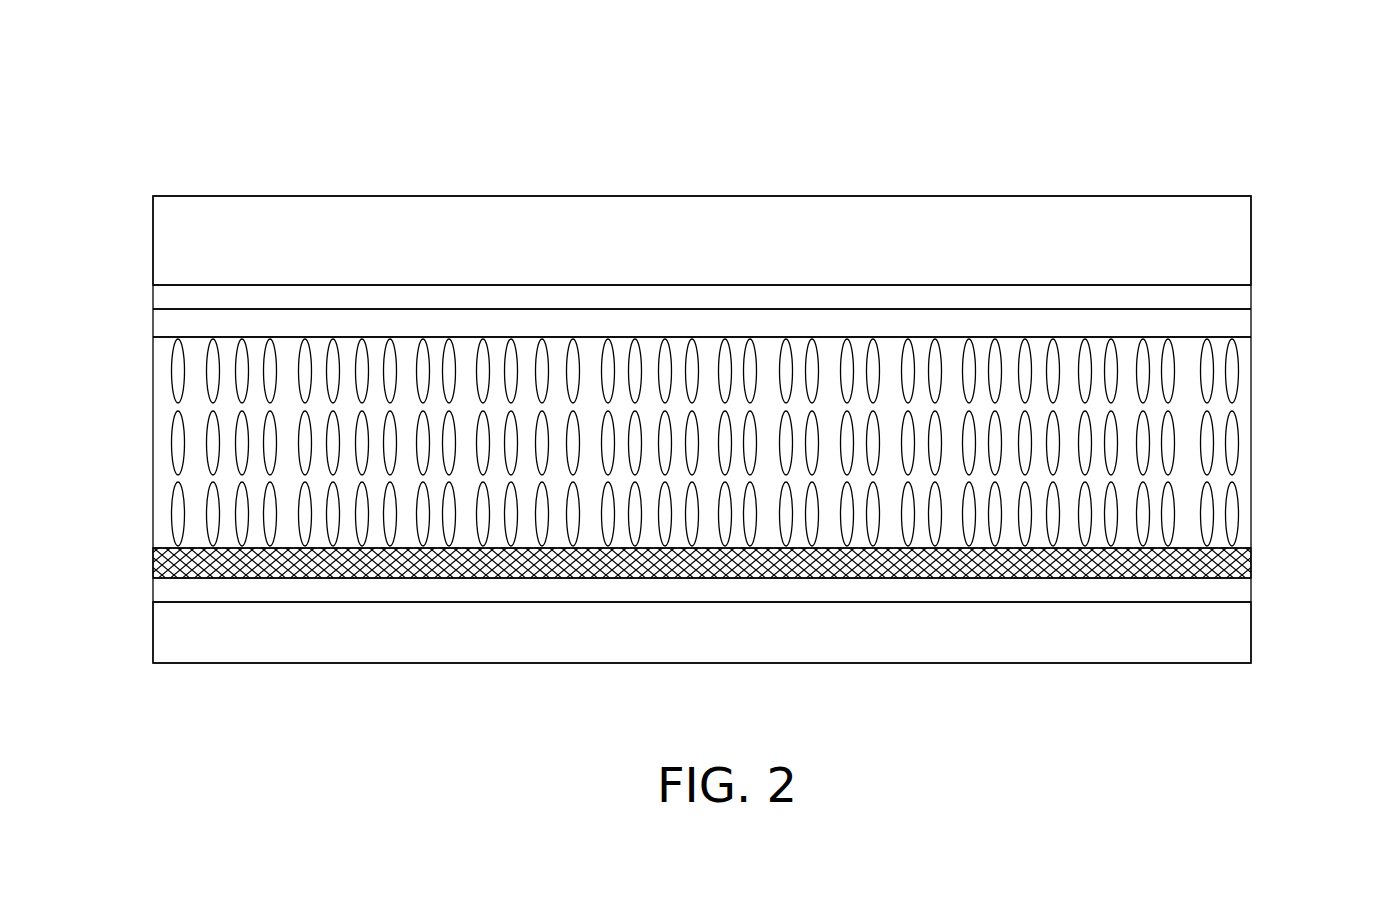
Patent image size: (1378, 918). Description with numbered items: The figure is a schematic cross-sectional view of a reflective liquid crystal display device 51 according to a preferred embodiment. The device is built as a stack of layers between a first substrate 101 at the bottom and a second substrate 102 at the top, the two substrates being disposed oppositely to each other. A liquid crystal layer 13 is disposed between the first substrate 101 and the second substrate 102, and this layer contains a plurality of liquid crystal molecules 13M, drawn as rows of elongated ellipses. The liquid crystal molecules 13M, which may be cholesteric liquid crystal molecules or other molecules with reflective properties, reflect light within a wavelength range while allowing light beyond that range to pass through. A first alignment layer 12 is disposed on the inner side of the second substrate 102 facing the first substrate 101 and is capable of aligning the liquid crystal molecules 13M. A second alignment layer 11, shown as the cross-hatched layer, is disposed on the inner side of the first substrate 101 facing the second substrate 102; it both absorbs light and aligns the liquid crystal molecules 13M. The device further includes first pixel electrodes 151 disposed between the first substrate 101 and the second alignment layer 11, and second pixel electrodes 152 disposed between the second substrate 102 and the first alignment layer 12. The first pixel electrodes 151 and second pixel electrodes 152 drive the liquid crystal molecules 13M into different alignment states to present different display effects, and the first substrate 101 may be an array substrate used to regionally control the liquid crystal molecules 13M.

The reflective liquid crystal display device 51 is at (1175, 137).
The second substrate 102 is at (1237, 244).
The second pixel electrodes 152 is at (1237, 298).
The first alignment layer 12 is at (1237, 326).
The liquid crystal layer 13 is at (1260, 337).
The liquid crystal molecules 13M is at (175, 443).
The second alignment layer 11 is at (1252, 565).
The first pixel electrodes 151 is at (1237, 593).
The first substrate 101 is at (1237, 650).